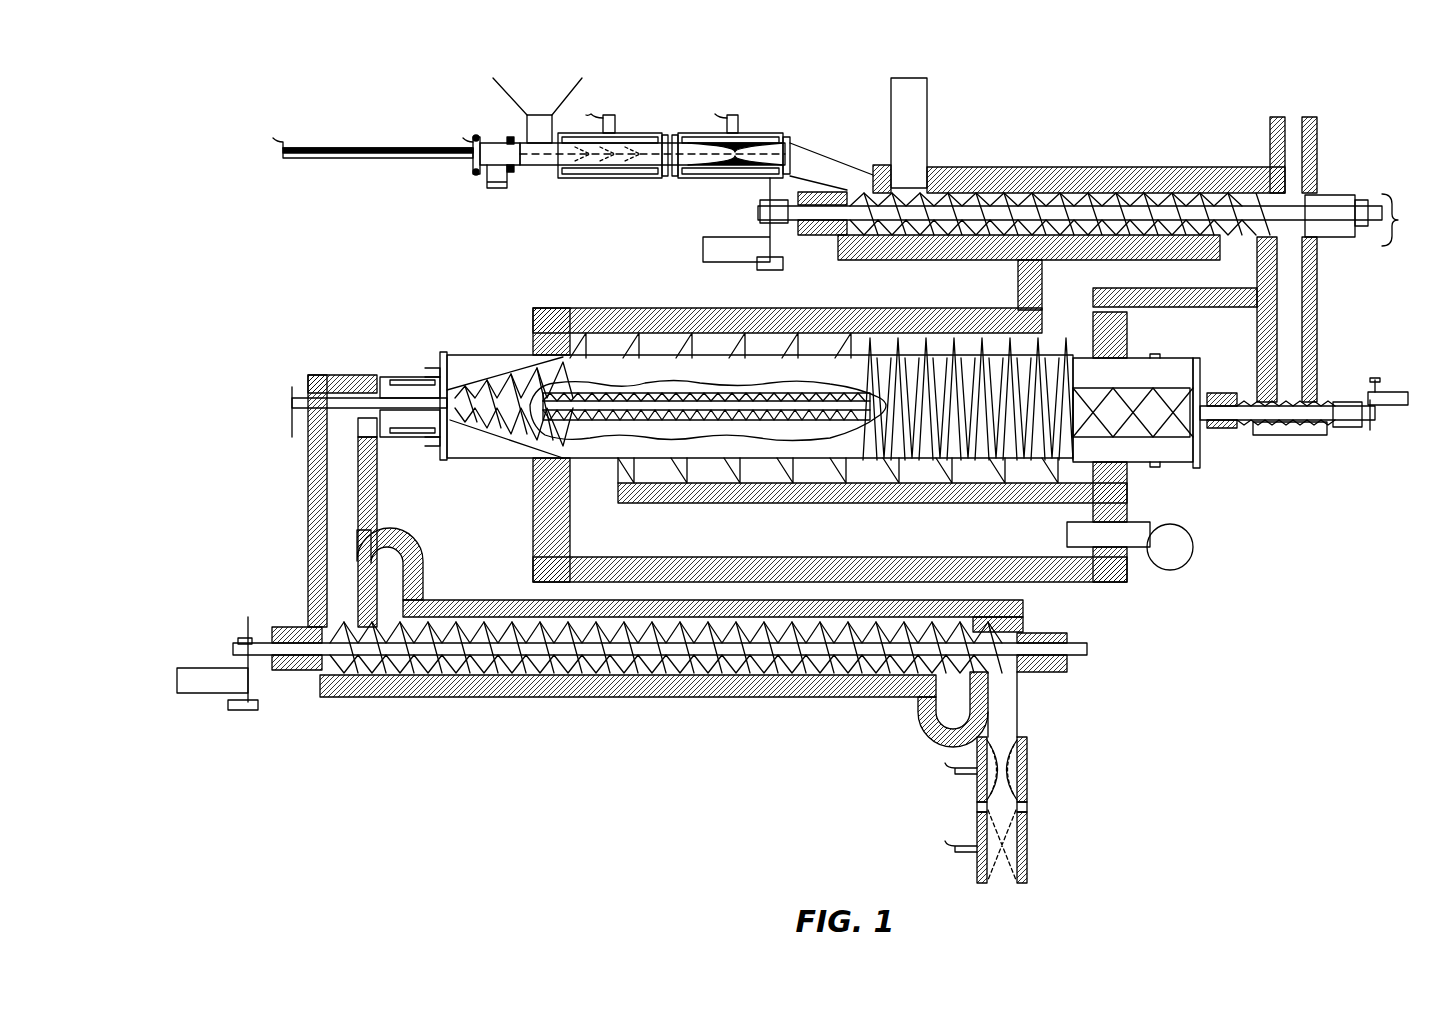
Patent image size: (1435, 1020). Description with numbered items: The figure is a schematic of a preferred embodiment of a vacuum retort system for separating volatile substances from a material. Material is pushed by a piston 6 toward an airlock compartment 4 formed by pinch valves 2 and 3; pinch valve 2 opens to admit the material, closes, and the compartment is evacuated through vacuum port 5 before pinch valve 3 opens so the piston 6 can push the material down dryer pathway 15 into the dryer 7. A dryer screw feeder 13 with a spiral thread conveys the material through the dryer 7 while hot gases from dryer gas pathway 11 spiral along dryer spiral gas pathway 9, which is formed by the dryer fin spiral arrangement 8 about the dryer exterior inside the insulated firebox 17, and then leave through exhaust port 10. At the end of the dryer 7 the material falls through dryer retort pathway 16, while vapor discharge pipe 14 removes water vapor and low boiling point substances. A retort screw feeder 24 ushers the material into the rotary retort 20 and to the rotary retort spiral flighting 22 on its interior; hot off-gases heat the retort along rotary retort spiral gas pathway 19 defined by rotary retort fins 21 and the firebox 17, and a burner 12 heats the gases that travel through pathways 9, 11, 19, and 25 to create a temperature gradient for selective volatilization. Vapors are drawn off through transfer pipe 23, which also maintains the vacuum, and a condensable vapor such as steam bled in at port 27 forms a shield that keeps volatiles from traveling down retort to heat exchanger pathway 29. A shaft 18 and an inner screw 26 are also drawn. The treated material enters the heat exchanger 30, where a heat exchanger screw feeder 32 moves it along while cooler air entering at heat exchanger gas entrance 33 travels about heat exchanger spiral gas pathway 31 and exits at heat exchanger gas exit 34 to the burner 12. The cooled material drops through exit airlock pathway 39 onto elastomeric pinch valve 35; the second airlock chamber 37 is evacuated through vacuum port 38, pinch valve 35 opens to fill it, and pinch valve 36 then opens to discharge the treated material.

The pinch valve 2 is at (618, 118).
The pinch valve 3 is at (710, 93).
The airlock compartment 4 is at (648, 180).
The vacuum port 5 is at (665, 182).
The piston 6 is at (428, 160).
The dryer 7 is at (1361, 220).
The dryer fin spiral arrangement 8 is at (952, 240).
The dryer spiral gas pathway 9 is at (990, 240).
The exhaust port 10 is at (918, 128).
The dryer gas pathway 11 is at (1238, 301).
The burner 12 is at (1182, 548).
The dryer screw feeder 13 is at (1068, 137).
The vapor discharge pipe 14 is at (1296, 123).
The dryer pathway 15 is at (820, 163).
The dryer retort pathway 16 is at (1292, 352).
The insulated firebox 17 is at (1020, 300).
The discharge shaft 18 is at (1318, 424).
The rotary retort spiral gas pathway 19 is at (776, 296).
The rotary retort 20 is at (240, 352).
The rotary retort fins 21 is at (838, 296).
The rotary retort spiral flighting 22 is at (700, 296).
The transfer pipe 23 is at (286, 360).
The retort screw feeder 24 is at (528, 437).
The gas pathway 25 is at (1026, 550).
The inner screw 26 is at (782, 423).
The port 27 is at (668, 423).
The retort to heat exchanger pathway 29 is at (340, 503).
The heat exchanger 30 is at (172, 640).
The heat exchanger spiral gas pathway 31 is at (530, 680).
The heat exchanger screw feeder 32 is at (343, 642).
The heat exchanger gas entrance 33 is at (943, 715).
The heat exchanger gas exit 34 is at (390, 557).
The pinch valve 35 is at (980, 780).
The pinch valve 36 is at (977, 860).
The second airlock chamber 37 is at (998, 812).
The vacuum port 38 is at (977, 808).
The exit airlock pathway 39 is at (1005, 708).